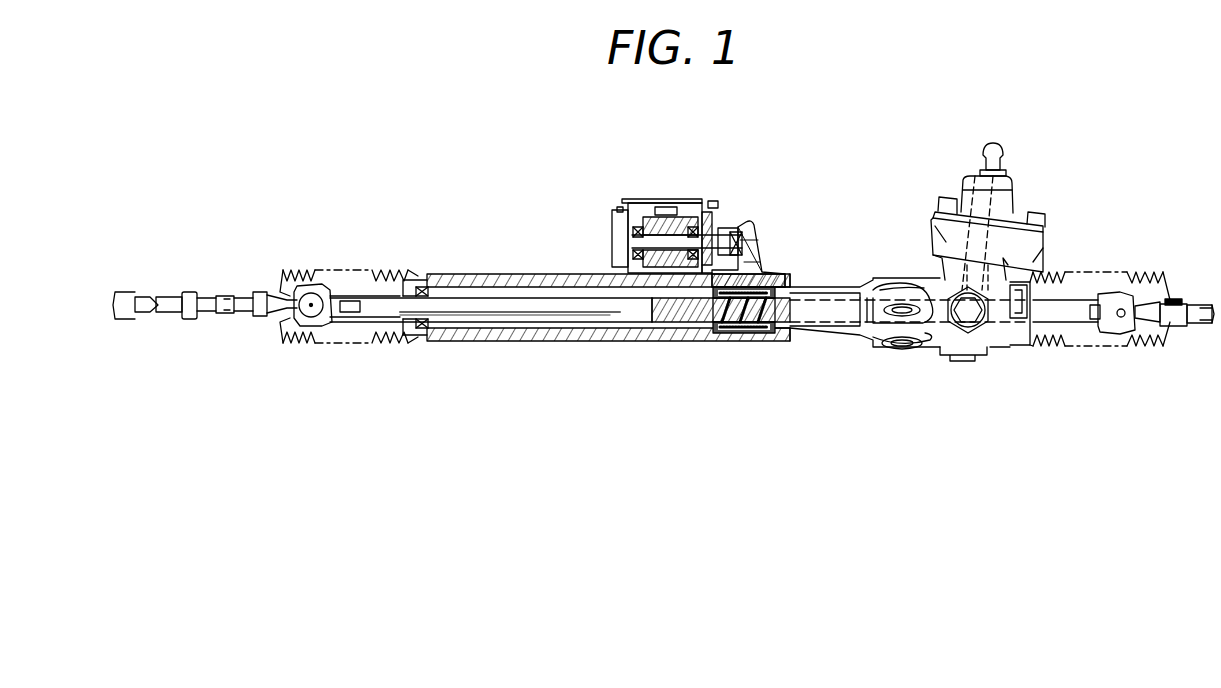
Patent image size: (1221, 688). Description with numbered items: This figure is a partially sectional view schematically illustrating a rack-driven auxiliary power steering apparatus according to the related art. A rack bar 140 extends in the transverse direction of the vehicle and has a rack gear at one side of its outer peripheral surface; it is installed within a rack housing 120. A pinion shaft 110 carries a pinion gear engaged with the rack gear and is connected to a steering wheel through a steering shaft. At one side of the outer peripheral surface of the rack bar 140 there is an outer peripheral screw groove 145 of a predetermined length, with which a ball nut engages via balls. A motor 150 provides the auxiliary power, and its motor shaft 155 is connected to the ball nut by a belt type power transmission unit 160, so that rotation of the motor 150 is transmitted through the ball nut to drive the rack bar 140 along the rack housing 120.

The pinion shaft 110 is at (985, 163).
The rack housing 120 is at (550, 339).
The rack bar 140 is at (490, 339).
The outer peripheral screw groove 145 is at (676, 330).
The motor 150 is at (660, 198).
The motor shaft 155 is at (752, 200).
The belt type power transmission unit 160 is at (770, 210).